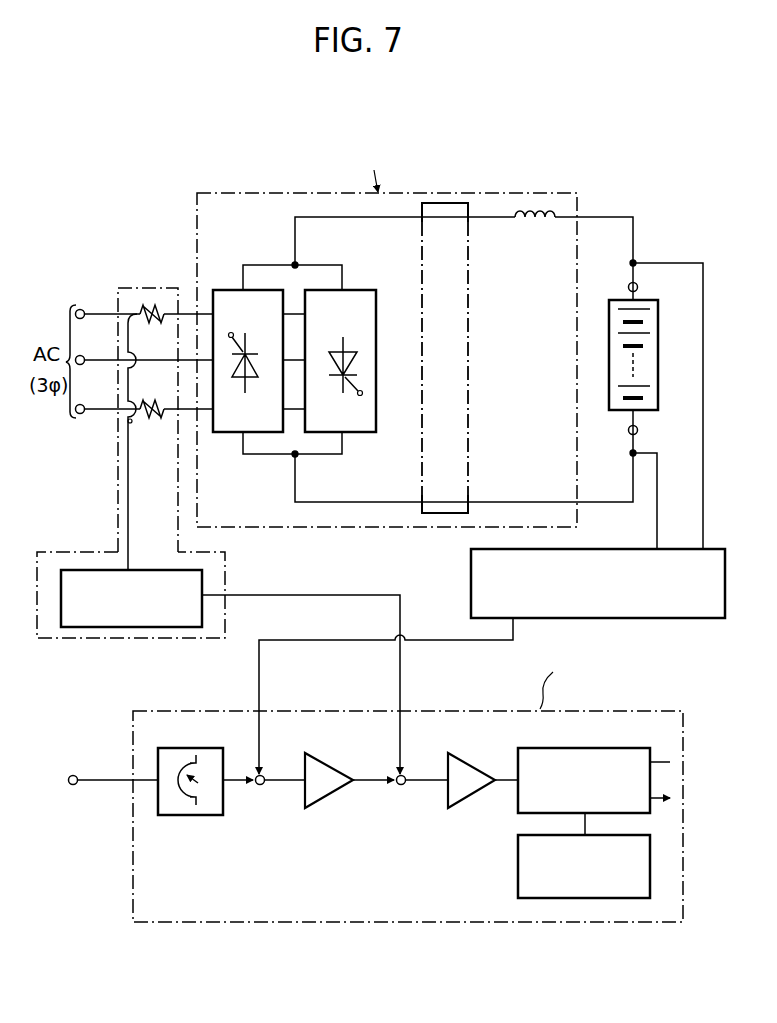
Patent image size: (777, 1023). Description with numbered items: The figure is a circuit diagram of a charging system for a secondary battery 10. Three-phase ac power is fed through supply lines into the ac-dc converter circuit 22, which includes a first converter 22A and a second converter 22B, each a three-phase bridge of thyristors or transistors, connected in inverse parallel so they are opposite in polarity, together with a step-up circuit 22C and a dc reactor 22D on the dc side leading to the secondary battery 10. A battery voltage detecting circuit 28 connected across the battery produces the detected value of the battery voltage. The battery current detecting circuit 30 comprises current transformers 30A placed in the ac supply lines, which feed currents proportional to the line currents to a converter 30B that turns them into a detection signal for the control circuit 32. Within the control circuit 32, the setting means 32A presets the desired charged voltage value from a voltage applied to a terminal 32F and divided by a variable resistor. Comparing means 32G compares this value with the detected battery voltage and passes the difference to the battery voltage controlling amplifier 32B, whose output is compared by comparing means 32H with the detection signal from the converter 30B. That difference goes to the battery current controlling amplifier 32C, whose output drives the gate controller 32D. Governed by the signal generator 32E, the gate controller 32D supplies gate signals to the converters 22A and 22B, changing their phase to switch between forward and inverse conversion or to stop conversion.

The secondary battery 10 is at (676, 286).
The ac-dc converter circuit 22 is at (505, 192).
The first converter 22A is at (232, 289).
The second converter 22B is at (360, 289).
The step-up circuit 22C is at (468, 400).
The dc reactor 22D is at (533, 232).
The battery voltage detecting circuit 28 is at (471, 570).
The battery current detecting circuit 30 is at (147, 287).
The current transformer 30A is at (152, 324).
The converter 30B is at (159, 570).
The control circuit 32 is at (724, 745).
The setting means 32A is at (183, 815).
The battery voltage controlling amplifier 32B is at (325, 808).
The battery current controlling amplifier 32C is at (470, 798).
The gate controller 32D is at (532, 748).
The signal generator 32E is at (518, 882).
The terminal 32F is at (75, 786).
The comparing means 32G is at (261, 790).
The comparing means 32H is at (399, 790).